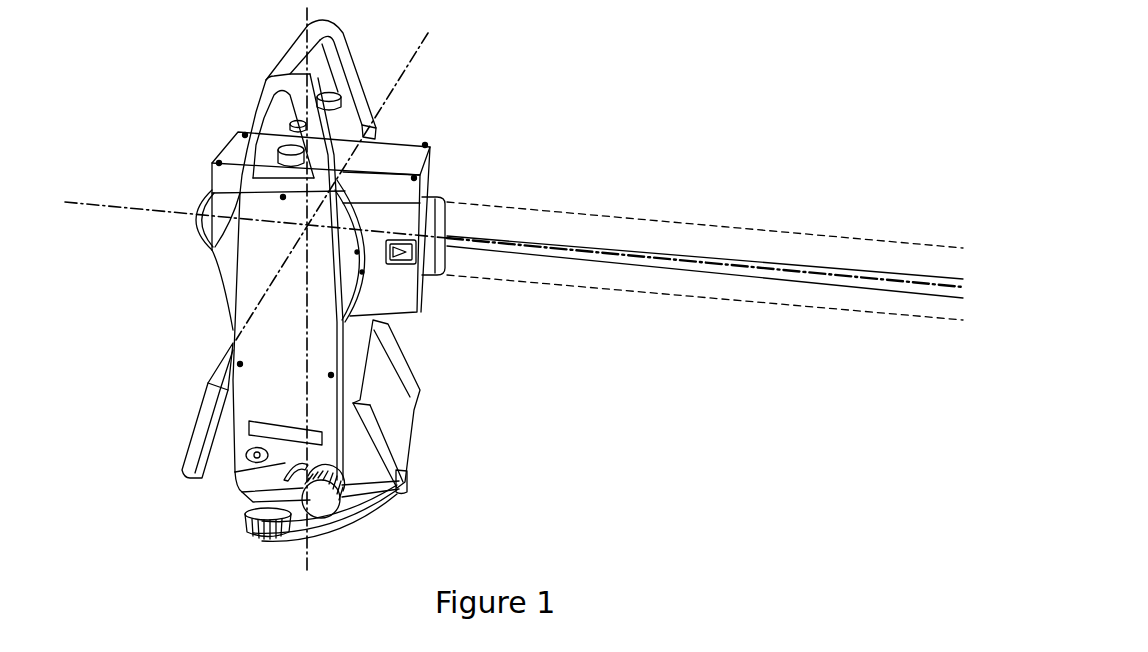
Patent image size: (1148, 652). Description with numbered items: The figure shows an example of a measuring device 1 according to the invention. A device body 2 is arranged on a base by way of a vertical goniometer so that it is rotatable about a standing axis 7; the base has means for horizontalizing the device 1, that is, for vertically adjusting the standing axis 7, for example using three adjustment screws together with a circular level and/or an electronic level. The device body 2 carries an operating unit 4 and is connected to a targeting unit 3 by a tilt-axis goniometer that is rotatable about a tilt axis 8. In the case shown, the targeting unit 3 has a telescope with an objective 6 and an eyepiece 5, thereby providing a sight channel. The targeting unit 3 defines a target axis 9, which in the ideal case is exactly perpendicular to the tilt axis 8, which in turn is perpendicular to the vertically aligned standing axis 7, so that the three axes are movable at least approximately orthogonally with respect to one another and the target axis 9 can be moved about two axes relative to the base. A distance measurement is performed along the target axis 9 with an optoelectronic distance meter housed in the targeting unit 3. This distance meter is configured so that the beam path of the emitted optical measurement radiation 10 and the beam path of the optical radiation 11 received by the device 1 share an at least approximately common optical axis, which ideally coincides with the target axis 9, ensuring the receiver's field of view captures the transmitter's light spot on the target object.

The device 1 is at (203, 112).
The device body 2 is at (285, 347).
The targeting unit 3 is at (393, 275).
The operating unit 4 is at (197, 420).
The eyepiece 5 is at (199, 213).
The objective 6 is at (432, 260).
The standing axis 7 is at (306, 27).
The tilt axis 8 is at (378, 113).
The target axis 9 is at (870, 277).
The emitted optical measurement radiation 10 is at (945, 277).
The received optical radiation 11 is at (740, 227).